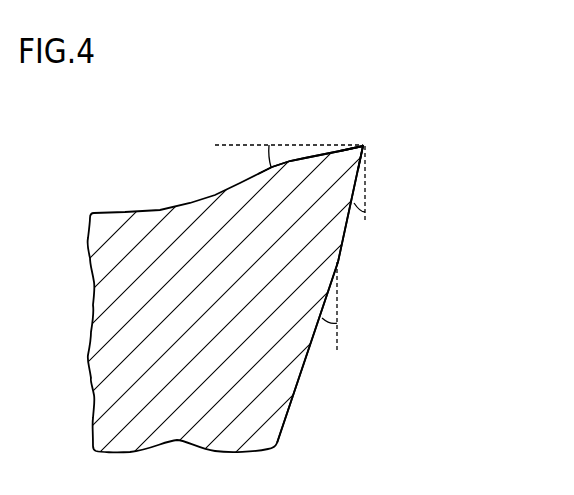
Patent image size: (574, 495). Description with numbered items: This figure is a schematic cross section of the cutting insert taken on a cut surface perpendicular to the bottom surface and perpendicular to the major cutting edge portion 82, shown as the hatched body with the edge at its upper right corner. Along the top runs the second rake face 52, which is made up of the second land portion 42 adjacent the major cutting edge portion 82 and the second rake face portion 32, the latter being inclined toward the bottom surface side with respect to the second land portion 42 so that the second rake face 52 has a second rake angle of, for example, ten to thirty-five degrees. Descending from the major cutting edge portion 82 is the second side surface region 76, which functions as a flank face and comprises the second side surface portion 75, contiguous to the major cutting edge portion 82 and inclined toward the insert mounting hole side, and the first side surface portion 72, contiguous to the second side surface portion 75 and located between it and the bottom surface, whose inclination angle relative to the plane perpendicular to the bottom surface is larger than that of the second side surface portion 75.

The second rake face portion 32 is at (302, 158).
The second land portion 42 is at (355, 146).
The second rake face 52 is at (368, 86).
The major cutting edge portion 82 is at (365, 146).
The second side surface portion 75 is at (348, 232).
The first side surface portion 72 is at (294, 388).
The second side surface region 76 is at (431, 226).